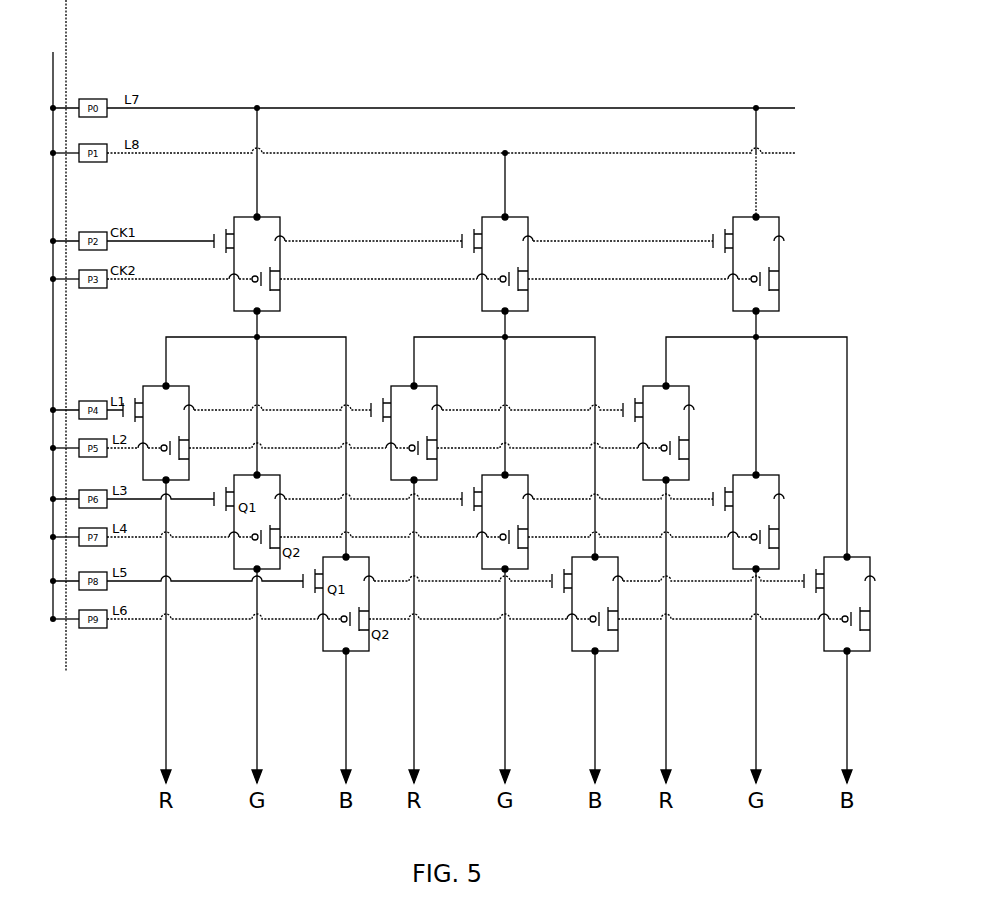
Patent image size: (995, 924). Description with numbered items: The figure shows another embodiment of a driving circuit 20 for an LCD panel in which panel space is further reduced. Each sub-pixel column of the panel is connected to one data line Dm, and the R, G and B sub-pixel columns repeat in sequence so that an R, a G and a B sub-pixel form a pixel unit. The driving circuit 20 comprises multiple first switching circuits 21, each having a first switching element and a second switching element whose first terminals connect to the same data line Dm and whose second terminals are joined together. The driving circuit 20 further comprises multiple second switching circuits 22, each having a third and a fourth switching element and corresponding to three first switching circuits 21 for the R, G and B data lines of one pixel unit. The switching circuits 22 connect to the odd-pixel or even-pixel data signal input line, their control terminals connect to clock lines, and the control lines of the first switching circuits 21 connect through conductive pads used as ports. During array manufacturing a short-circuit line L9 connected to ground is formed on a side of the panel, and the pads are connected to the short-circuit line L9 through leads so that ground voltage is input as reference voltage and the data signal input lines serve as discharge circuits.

The driving circuit 20 is at (798, 282).
The first switching circuit 21 is at (152, 386).
The second switching circuit 22 is at (243, 215).
The short-circuit line L9 is at (53, 52).
The data line Dm is at (166, 740).